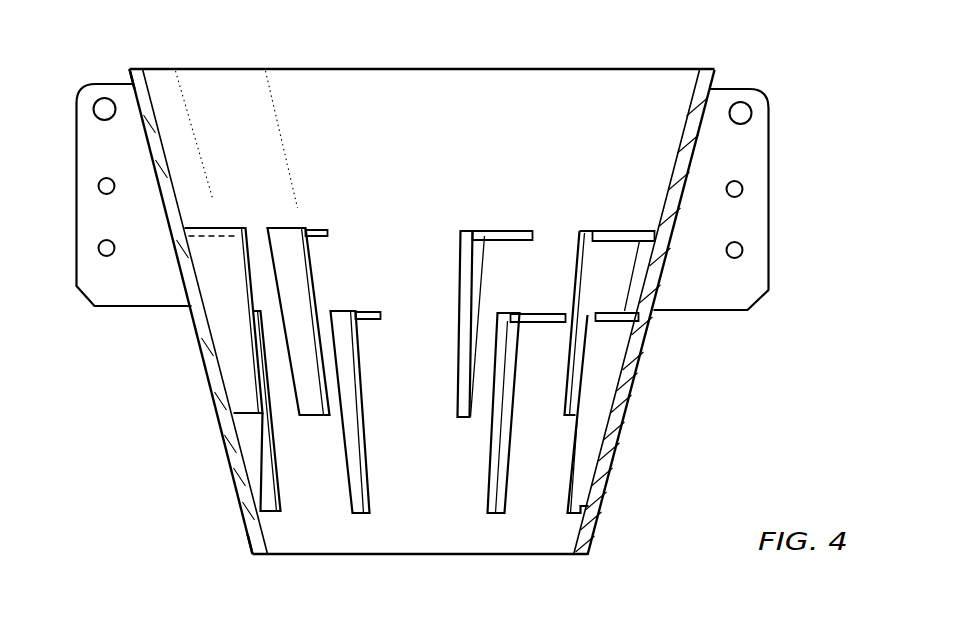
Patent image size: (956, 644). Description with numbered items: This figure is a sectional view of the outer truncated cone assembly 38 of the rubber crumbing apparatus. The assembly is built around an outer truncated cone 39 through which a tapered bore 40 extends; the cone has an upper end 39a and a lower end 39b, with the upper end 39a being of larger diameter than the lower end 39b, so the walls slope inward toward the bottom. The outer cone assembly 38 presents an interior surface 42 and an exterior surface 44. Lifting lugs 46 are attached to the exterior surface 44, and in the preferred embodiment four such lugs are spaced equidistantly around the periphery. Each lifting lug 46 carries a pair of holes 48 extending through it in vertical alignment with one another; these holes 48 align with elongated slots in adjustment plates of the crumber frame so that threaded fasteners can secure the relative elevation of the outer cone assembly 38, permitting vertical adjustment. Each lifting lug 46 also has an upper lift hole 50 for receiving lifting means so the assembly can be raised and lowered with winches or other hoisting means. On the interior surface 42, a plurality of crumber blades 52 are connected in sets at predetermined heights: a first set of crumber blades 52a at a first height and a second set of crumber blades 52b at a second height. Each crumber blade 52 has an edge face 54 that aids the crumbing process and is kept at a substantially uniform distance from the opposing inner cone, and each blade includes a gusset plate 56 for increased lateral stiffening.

The outer truncated cone assembly 38 is at (536, 57).
The outer truncated cone 39 is at (198, 358).
The upper end 39a is at (118, 66).
The lower end 39b is at (238, 523).
The tapered bore 40 is at (374, 82).
The interior surface 42 is at (440, 145).
The exterior surface 44 is at (622, 395).
The lifting lug 46 is at (68, 145).
The hole 48 is at (90, 177).
The upper lift hole 50 is at (92, 100).
The crumber blade 52 is at (312, 282).
The first set of crumber blades 52a is at (312, 248).
The second set of crumber blades 52b is at (352, 375).
The edge face 54 is at (452, 287).
The gusset plate 56 is at (316, 217).